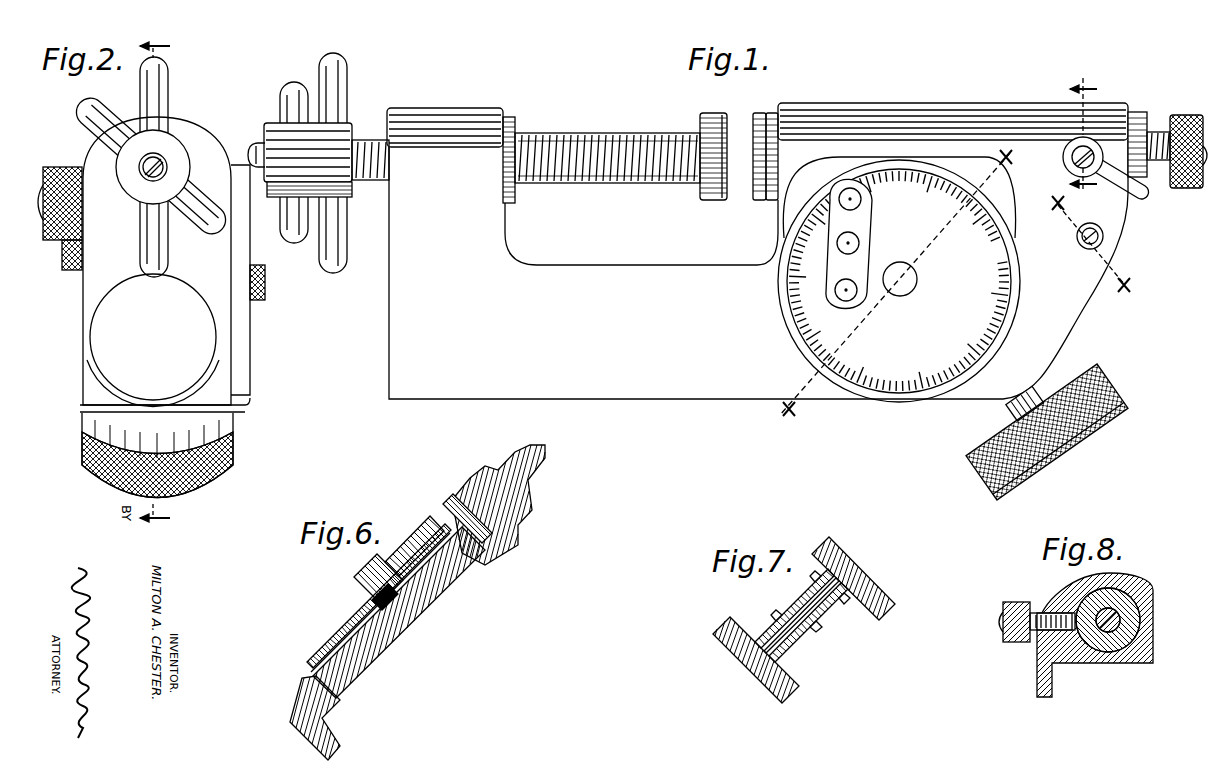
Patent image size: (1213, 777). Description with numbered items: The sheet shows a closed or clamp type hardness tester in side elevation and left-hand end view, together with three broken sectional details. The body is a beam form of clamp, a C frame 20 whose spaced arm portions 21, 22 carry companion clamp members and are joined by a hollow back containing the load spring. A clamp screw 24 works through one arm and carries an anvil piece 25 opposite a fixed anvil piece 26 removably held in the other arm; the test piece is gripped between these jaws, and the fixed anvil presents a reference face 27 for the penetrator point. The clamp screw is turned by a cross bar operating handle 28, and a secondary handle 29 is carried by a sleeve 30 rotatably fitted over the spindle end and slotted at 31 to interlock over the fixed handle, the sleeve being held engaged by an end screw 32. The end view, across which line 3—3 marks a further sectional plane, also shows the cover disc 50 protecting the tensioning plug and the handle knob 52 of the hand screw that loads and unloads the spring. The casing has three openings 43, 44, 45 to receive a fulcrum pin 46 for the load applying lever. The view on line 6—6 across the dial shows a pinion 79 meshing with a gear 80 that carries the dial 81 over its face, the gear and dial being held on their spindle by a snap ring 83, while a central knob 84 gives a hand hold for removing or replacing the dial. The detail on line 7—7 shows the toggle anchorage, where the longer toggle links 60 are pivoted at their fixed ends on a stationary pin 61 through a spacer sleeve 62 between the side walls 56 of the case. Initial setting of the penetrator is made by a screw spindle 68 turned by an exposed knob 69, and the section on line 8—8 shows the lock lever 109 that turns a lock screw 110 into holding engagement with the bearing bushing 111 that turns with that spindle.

In FIG. 2, the section line 3- 3 is at (155, 280).
In FIG. 1, the section line 6— 6 is at (895, 293).
In FIG. 1, the section line 7— 7 is at (1091, 245).
In FIG. 1, the section line 8— 8 is at (1085, 138).
In FIG. 1, the C frame 20 is at (458, 400).
In FIG. 2, the arm portion 21 is at (200, 138).
In FIG. 1, the arm portion 21 is at (444, 110).
In FIG. 1, the arm portion 22 is at (805, 112).
In FIG. 1, the clamp screw 24 is at (604, 138).
In FIG. 1, the anvil piece 25 is at (714, 202).
In FIG. 1, the fixed anvil piece 26 is at (760, 122).
In FIG. 1, the reference face 27 is at (756, 188).
In FIG. 2, the operating handle 28 is at (167, 82).
In FIG. 1, the operating handle 28 is at (346, 66).
In FIG. 2, the secondary handle 29 is at (90, 112).
In FIG. 1, the secondary handle 29 is at (294, 90).
In FIG. 2, the sleeve 30 is at (185, 170).
In FIG. 1, the sleeve 30 is at (276, 196).
In FIG. 1, the slot 31 is at (343, 190).
In FIG. 2, the end screw 32 is at (142, 172).
In FIG. 1, the end screw 32 is at (252, 150).
In FIG. 1, the opening 43 is at (862, 201).
In FIG. 1, the opening 44 is at (860, 244).
In FIG. 1, the opening 45 is at (856, 298).
In FIG. 1, the fulcrum pin 46 is at (836, 262).
In FIG. 2, the cover disc 50 is at (110, 347).
In FIG. 2, the handle knob 52 is at (221, 482).
In FIG. 1, the handle knob 52 is at (1124, 408).
In FIG. 7, the side walls 56 is at (888, 610).
In FIG. 7, the longer toggle links 60 is at (798, 594).
In FIG. 1, the stationary stud or pin 61 is at (1100, 237).
In FIG. 7, the stationary stud or pin 61 is at (840, 578).
In FIG. 1, the spacer sleeve 62 is at (1084, 248).
In FIG. 7, the spacer sleeve 62 is at (818, 636).
In FIG. 8, the screw spindle 68 is at (1122, 620).
In FIG. 2, the knob 69 is at (60, 218).
In FIG. 1, the knob 69 is at (1188, 116).
In FIG. 6, the pinion 79 is at (474, 502).
In FIG. 6, the gear 80 is at (332, 650).
In FIG. 1, the dial 81 is at (881, 366).
In FIG. 6, the dial 81 is at (372, 600).
In FIG. 6, the snap ring 83 is at (412, 560).
In FIG. 2, the knob 84 is at (258, 300).
In FIG. 1, the knob 84 is at (918, 280).
In FIG. 6, the knob 84 is at (366, 572).
In FIG. 1, the lock lever 109 is at (1148, 200).
In FIG. 8, the lock lever 109 is at (1012, 642).
In FIG. 8, the lock screw 110 is at (1046, 610).
In FIG. 8, the bearing bushing 111 is at (1126, 597).